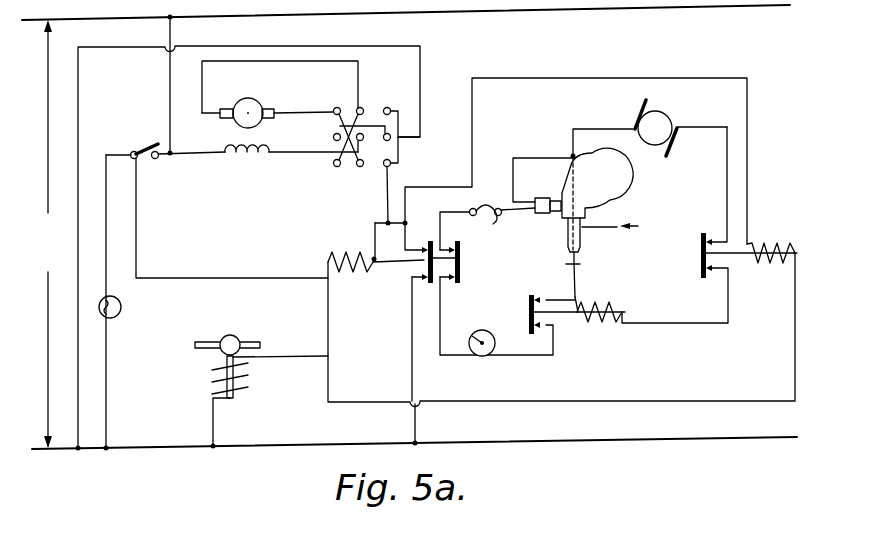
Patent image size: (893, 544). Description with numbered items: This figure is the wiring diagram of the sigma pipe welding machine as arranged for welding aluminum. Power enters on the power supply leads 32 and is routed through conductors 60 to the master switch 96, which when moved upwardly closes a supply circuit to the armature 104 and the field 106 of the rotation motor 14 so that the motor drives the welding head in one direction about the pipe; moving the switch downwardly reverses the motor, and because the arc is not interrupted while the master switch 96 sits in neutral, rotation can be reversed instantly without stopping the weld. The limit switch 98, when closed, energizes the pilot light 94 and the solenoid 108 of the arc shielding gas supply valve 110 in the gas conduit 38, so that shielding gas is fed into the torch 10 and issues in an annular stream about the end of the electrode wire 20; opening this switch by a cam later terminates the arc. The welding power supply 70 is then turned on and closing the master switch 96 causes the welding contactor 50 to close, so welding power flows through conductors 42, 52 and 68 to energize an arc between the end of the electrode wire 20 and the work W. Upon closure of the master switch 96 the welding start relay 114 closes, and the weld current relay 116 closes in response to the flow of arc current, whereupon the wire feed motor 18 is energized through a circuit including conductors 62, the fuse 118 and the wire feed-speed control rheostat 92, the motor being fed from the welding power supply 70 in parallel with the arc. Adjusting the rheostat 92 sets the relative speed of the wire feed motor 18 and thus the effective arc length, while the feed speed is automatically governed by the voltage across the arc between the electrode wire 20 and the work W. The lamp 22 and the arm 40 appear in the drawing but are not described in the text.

The torch 10 is at (566, 228).
The rotation motor 14 is at (254, 127).
The wire feed motor 18 is at (544, 199).
The electrode wire 20 is at (571, 253).
The lamp bulb 22 is at (611, 183).
The power supply leads 32 is at (523, 14).
The conduit 38 is at (205, 352).
The arm 40 is at (612, 230).
The conductor 42 is at (587, 128).
The welding contactor 50 is at (733, 270).
The conductor 52 is at (727, 195).
The conductors 60 is at (420, 60).
The conductors 62 is at (560, 156).
The conductor 68 is at (681, 324).
The welding power supply 70 is at (664, 117).
The wire feed-speed control rheostat 92 is at (482, 331).
The pilot light 94 is at (122, 309).
The master switch 96 is at (367, 142).
The limit switch 98 is at (146, 157).
The armature 104 is at (248, 108).
The field 106 is at (249, 160).
The solenoid 108 is at (240, 380).
The arc shielding gas supply valve 110 is at (230, 335).
The welding start relay 114 is at (385, 266).
The weld current relay 116 is at (565, 316).
The fuse 118 is at (491, 219).
The work W is at (580, 265).